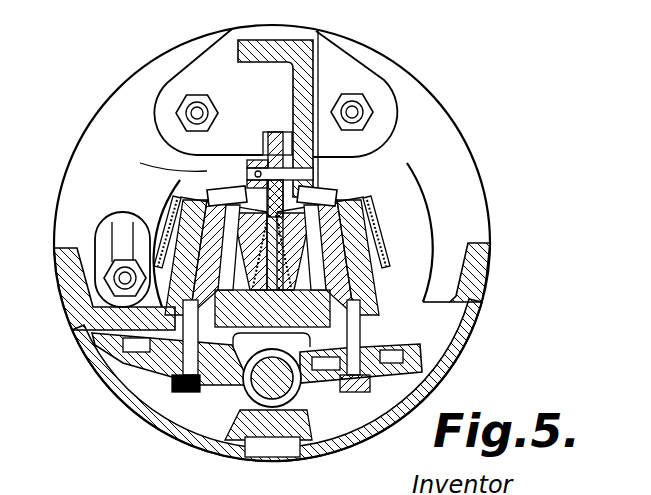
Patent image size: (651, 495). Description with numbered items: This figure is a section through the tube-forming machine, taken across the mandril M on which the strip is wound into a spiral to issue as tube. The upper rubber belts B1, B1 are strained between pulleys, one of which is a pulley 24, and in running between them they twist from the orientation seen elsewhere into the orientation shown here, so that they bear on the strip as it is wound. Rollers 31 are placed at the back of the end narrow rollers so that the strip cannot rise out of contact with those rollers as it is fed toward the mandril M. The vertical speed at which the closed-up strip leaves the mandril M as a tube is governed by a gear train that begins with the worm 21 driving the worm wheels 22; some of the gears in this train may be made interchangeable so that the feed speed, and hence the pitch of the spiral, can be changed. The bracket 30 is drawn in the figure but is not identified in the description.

The supporting bracket plate 30 is at (306, 72).
The rollers 31 is at (274, 130).
The pulley 24 is at (178, 186).
The upper rubber belts B1 is at (157, 200).
The worm wheels 22 is at (150, 362).
The worm 21 is at (262, 396).
The mandril M is at (264, 367).